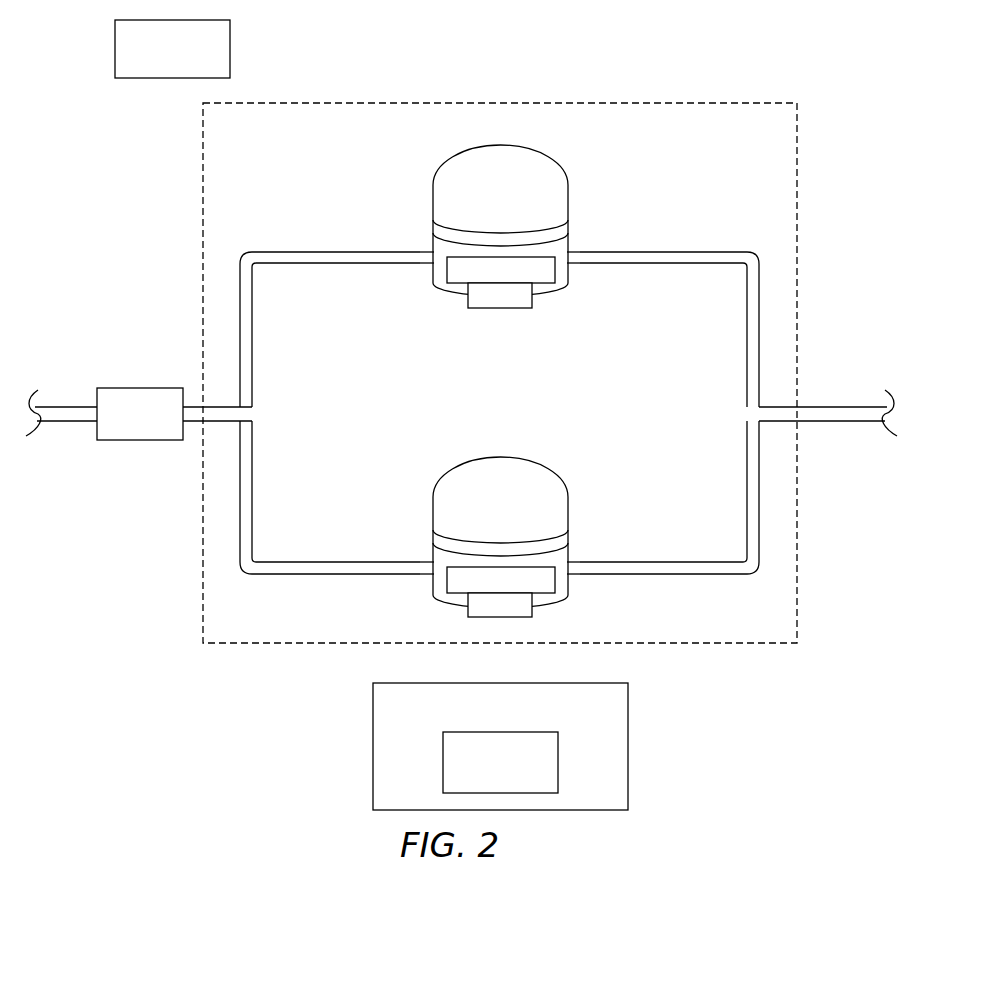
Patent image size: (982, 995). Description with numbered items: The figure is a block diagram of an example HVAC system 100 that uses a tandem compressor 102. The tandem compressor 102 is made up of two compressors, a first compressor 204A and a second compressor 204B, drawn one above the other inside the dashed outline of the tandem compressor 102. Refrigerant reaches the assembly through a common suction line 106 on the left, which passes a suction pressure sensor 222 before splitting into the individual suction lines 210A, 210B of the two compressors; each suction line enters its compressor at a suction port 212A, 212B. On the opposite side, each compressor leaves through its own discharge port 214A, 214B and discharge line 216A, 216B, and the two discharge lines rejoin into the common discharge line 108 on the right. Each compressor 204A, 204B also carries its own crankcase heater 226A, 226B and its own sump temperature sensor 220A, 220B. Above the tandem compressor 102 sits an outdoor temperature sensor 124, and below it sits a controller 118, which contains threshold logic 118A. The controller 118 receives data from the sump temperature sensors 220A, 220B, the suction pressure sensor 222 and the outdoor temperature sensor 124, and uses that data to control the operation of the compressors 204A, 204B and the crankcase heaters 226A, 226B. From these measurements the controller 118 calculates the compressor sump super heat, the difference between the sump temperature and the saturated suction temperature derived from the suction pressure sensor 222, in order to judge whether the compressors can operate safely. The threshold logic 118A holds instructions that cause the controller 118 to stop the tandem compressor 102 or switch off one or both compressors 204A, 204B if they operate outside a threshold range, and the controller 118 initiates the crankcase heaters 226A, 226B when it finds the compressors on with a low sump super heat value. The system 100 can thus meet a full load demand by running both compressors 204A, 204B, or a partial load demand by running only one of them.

The HVAC system 100 is at (756, 30).
The tandem compressor 102 is at (798, 170).
The suction line 106 is at (62, 423).
The discharge line 108 is at (828, 422).
The controller 118 is at (500, 746).
The threshold logic 118A is at (500, 762).
The outdoor temperature sensor 124 is at (172, 49).
The suction pressure sensor 222 is at (140, 414).
The compressor 204A is at (540, 153).
The compressor 204B is at (540, 465).
The suction line 210A is at (357, 252).
The suction line 210B is at (357, 562).
The suction port 212A is at (428, 268).
The suction port 212B is at (428, 578).
The discharge port 214A is at (572, 265).
The discharge port 214B is at (572, 575).
The discharge line 216A is at (628, 252).
The discharge line 216B is at (628, 562).
The sump temperature sensor 220A is at (507, 297).
The sump temperature sensor 220B is at (515, 607).
The crankcase heater 226A is at (462, 276).
The crankcase heater 226B is at (462, 588).